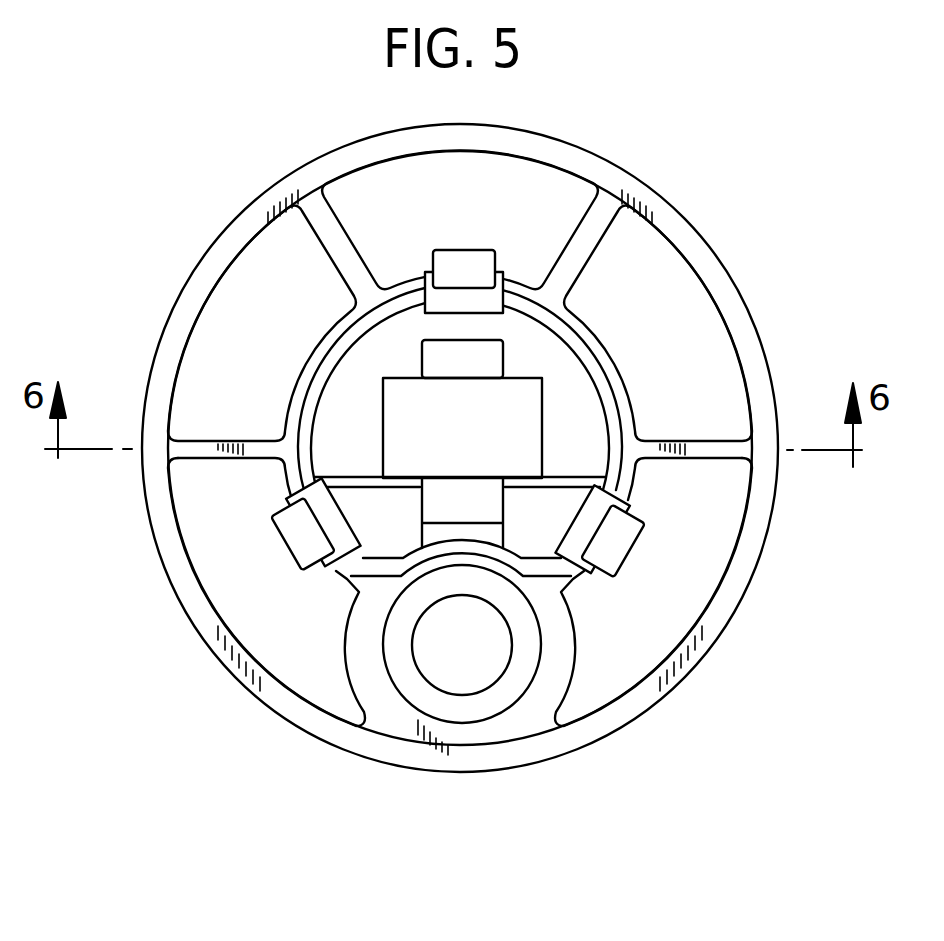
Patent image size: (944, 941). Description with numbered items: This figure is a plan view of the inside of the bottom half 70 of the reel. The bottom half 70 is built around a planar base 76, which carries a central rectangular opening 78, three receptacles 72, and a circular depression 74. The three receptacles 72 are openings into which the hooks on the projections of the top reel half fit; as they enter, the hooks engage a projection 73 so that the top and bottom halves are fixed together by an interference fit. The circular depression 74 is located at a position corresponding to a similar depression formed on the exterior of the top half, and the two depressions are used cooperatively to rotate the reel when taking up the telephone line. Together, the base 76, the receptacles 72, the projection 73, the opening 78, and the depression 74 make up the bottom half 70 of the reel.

The bottom half of the reel 70 is at (806, 180).
The receptacles 72 is at (440, 279).
The projection 73 is at (310, 547).
The circular depression 74 is at (430, 694).
The planar base 76 is at (255, 263).
The central rectangular opening 78 is at (388, 447).